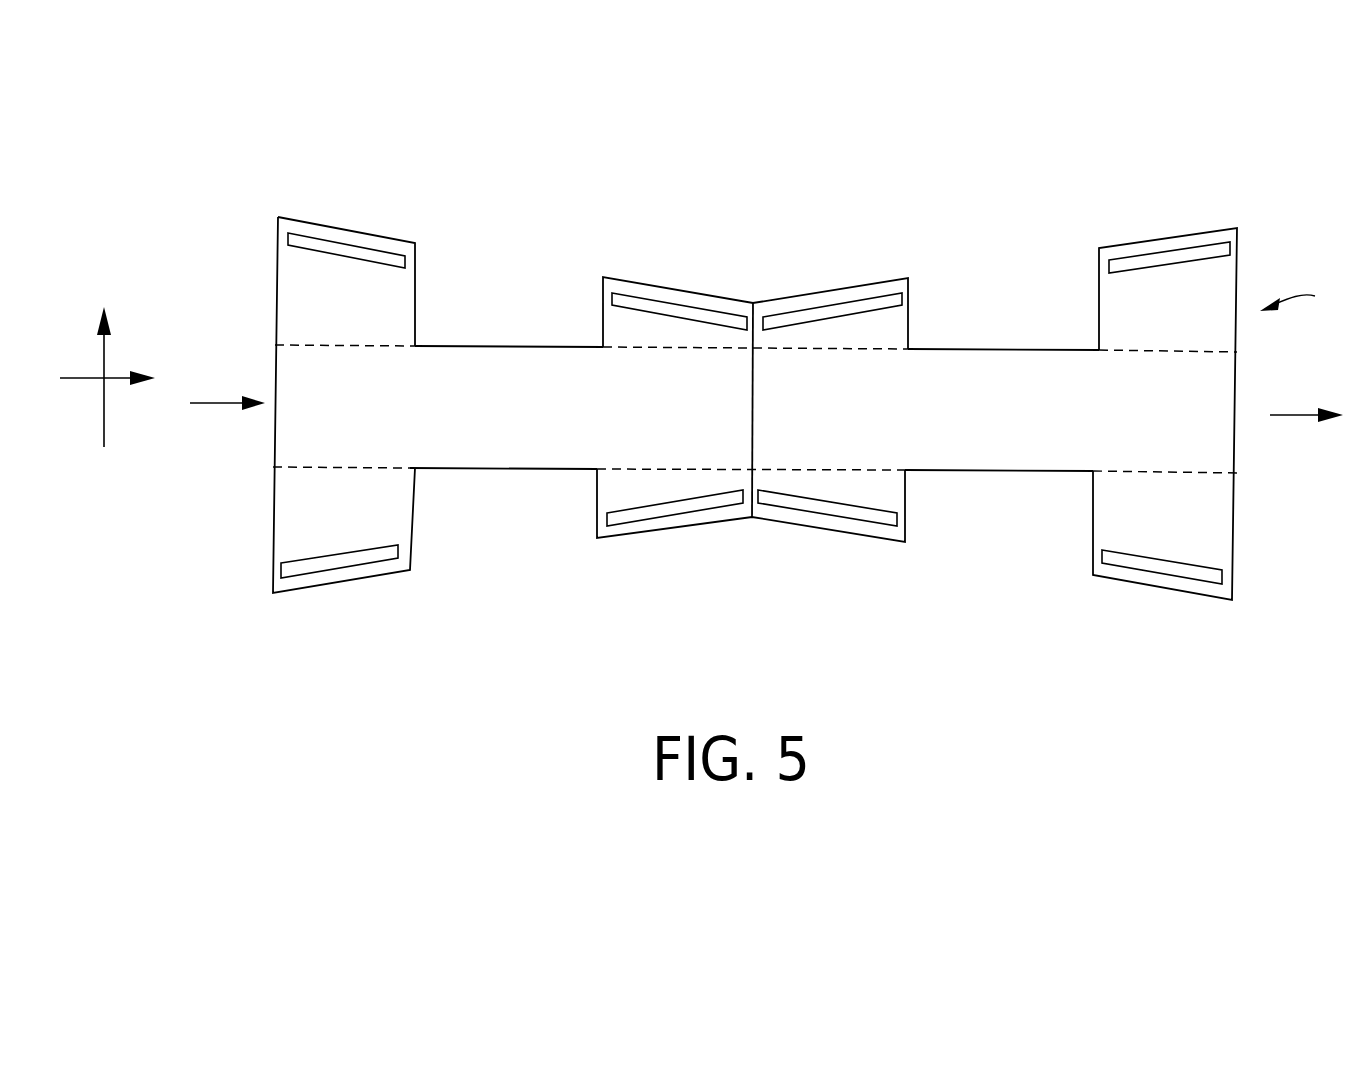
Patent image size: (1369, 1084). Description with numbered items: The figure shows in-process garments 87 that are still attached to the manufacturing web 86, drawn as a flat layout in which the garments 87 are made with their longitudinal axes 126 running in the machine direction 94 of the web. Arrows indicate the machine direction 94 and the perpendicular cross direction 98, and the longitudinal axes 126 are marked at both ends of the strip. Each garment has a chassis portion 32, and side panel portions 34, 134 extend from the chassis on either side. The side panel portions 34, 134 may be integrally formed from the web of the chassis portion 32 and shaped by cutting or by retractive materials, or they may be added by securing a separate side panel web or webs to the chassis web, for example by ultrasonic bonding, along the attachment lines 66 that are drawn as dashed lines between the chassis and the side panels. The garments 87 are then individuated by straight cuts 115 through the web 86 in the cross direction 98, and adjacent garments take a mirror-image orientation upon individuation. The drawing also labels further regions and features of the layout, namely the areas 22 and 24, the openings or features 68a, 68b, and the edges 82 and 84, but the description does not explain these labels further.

The central panel 22 is at (724, 413).
The end panel 24 is at (334, 392).
The chassis portion 32 is at (937, 450).
The side panel portion 34 is at (597, 326).
The attachment lines 66 is at (375, 348).
The central slot 68a is at (665, 292).
The end slot 68b is at (375, 236).
The slot edge 82 is at (658, 315).
The slot edge 84 is at (362, 262).
The web 86 is at (1307, 293).
The in-process garments 87 is at (523, 428).
The machine direction 94 is at (77, 380).
The cross direction 98 is at (118, 378).
The straight cuts 115 is at (752, 538).
The longitudinal axes 126 is at (217, 403).
The side panel portion 134 is at (395, 298).